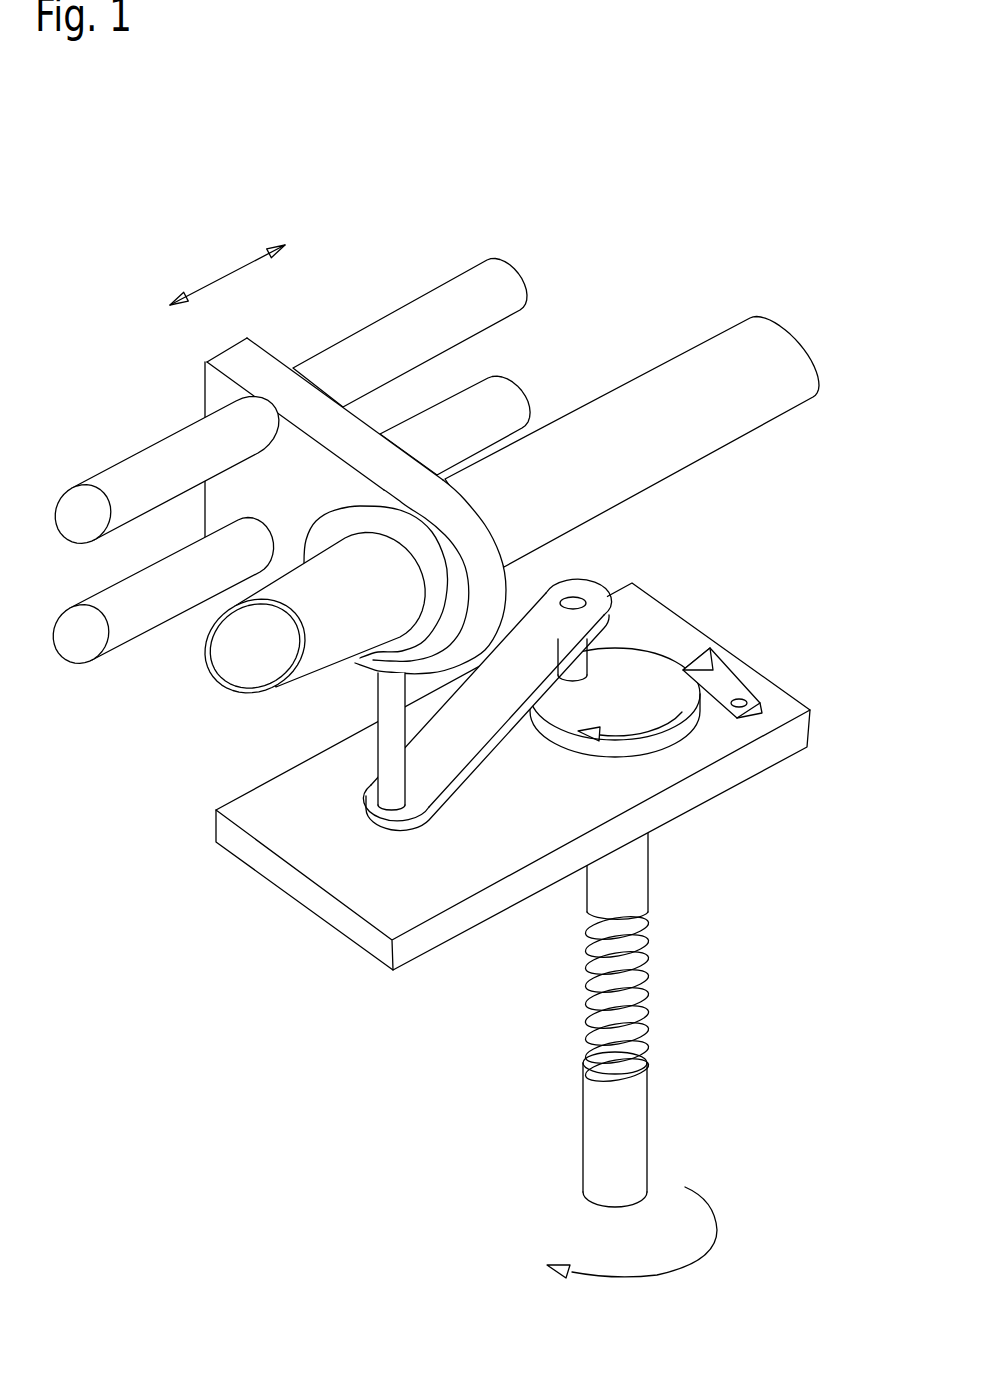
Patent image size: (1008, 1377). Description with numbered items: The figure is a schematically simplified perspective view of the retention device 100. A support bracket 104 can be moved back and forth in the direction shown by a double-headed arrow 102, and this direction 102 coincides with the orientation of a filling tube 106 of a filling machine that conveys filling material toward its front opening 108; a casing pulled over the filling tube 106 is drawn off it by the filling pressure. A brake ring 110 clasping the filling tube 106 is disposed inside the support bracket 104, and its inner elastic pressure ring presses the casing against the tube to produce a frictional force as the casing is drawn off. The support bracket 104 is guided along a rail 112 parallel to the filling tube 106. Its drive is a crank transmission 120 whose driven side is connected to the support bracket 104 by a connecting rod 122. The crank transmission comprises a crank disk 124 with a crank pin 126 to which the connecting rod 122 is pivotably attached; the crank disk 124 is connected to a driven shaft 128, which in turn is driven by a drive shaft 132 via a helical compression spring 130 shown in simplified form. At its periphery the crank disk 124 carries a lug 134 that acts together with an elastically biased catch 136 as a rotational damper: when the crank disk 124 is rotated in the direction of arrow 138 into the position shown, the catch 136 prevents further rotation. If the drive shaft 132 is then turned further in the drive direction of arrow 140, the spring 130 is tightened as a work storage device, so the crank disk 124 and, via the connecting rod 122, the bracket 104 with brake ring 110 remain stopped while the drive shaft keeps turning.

The retention device 100 is at (394, 1122).
The double-headed arrow 102 is at (228, 270).
The support bracket 104 is at (227, 387).
The filling tube 106 is at (613, 427).
The front opening 108 is at (243, 683).
The brake ring 110 is at (360, 658).
The rail 112 is at (487, 403).
The crank transmission 120 is at (762, 591).
The connecting rod 122 is at (440, 748).
The crank disk 124 is at (688, 715).
The crank pin 126 is at (580, 602).
The driven shaft 128 is at (620, 883).
The helical compression spring 130 is at (630, 1013).
The drive shaft 132 is at (618, 1133).
The lug 134 is at (725, 688).
The catch 136 is at (742, 700).
The arrow 138 is at (603, 737).
The arrow 140 is at (683, 1265).